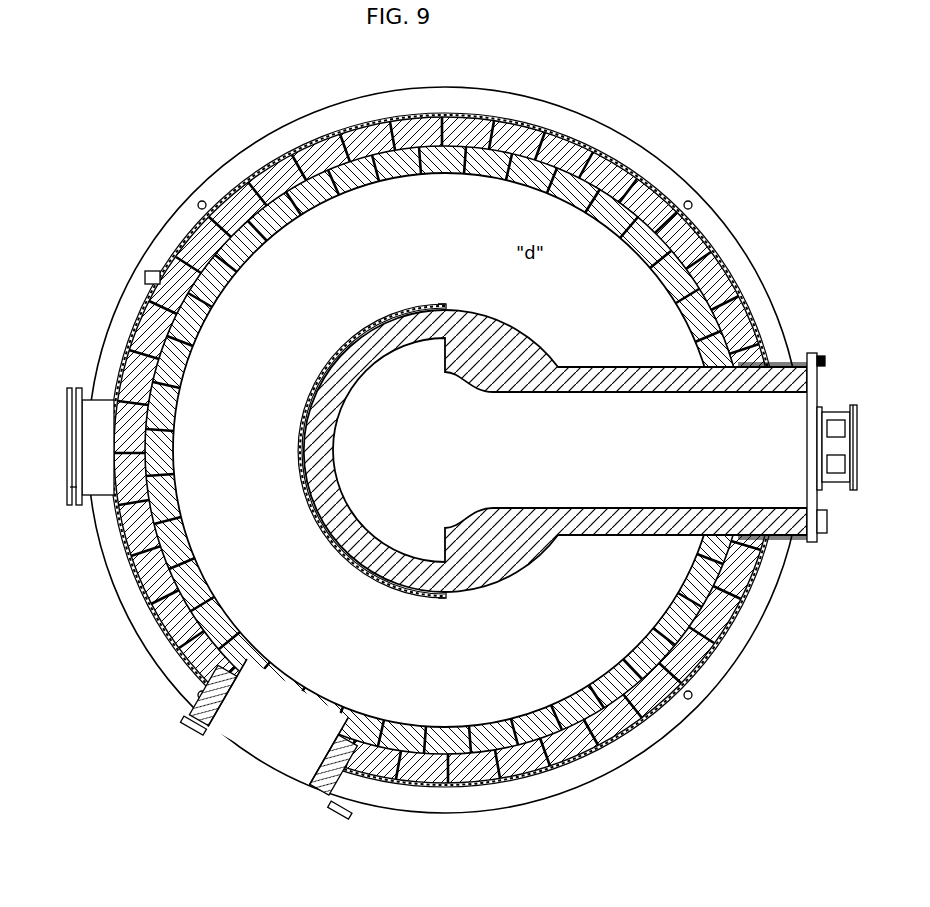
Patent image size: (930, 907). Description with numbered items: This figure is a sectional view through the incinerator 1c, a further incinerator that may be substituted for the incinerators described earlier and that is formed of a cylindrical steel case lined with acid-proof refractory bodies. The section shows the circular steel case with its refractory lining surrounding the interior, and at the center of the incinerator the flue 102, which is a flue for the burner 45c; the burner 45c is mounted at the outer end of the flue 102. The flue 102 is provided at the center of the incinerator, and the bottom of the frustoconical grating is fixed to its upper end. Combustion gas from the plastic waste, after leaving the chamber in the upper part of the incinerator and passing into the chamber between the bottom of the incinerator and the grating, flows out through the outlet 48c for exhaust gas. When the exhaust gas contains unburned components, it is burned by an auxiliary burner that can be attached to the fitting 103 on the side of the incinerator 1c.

The incinerator 1c is at (660, 160).
The flue 102 is at (760, 356).
The burner 45c is at (822, 434).
The fitting 103 is at (92, 440).
The outlet for exhaust gas 48c is at (263, 750).